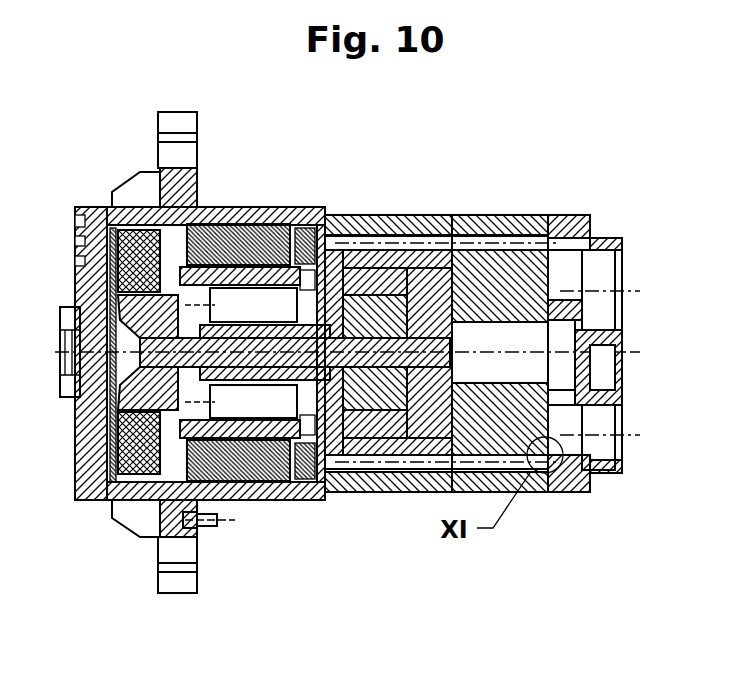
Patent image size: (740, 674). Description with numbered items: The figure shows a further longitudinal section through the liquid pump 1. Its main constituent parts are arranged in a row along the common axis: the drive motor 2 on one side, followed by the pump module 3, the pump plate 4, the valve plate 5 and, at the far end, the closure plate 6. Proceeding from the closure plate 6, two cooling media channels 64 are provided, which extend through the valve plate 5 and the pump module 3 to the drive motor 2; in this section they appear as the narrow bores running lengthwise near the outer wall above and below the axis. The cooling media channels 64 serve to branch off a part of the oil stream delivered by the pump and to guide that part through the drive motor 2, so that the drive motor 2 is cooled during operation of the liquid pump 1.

The liquid pump 1 is at (258, 528).
The drive motor 2 is at (244, 208).
The pump module 3 is at (356, 196).
The pump plate 4 is at (423, 212).
The valve plate 5 is at (525, 212).
The closure plate 6 is at (568, 210).
The cooling media channels 64 is at (491, 212).